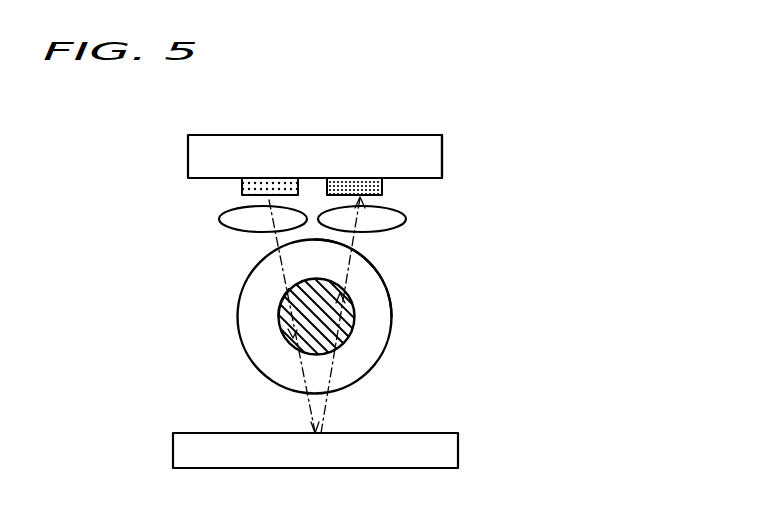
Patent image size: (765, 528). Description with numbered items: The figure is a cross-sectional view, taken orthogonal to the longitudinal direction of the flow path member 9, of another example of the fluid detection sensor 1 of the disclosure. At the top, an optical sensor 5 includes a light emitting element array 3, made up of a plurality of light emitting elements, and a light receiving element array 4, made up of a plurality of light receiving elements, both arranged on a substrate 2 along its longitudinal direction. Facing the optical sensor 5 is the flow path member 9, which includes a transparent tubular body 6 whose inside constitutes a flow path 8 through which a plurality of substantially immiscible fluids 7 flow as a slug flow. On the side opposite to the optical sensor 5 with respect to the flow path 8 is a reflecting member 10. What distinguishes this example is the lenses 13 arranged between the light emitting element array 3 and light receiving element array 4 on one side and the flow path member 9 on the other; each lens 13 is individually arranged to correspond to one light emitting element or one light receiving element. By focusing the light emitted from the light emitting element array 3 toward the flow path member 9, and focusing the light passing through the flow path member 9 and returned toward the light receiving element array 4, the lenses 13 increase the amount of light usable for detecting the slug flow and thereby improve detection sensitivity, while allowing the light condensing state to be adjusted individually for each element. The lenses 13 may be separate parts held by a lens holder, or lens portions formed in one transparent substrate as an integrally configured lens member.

The fluid detection sensor 1 is at (434, 115).
The substrate 2 is at (203, 146).
The light emitting element array 3 is at (270, 196).
The light receiving element array 4 is at (352, 193).
The optical sensor 5 is at (443, 151).
The tubular body 6 is at (255, 285).
The fluids 7 is at (302, 322).
The flow path 8 is at (276, 316).
The flow path member 9 is at (392, 303).
The reflecting member 10 is at (430, 432).
The lenses 13 is at (401, 218).